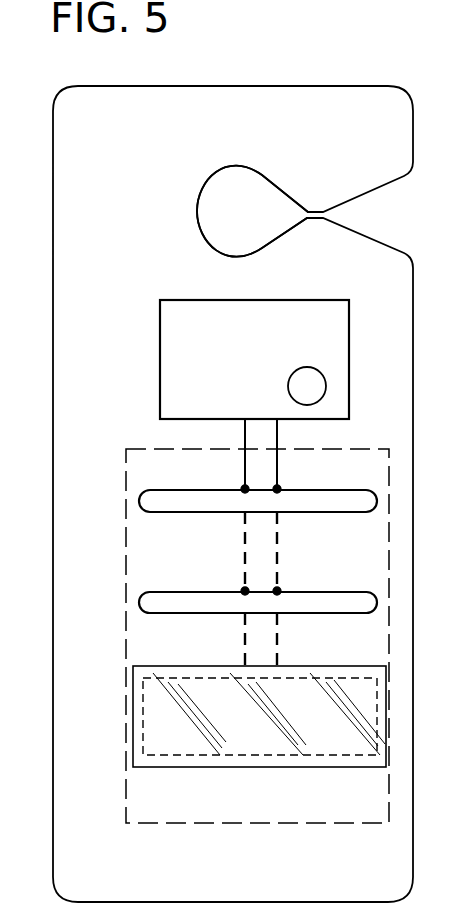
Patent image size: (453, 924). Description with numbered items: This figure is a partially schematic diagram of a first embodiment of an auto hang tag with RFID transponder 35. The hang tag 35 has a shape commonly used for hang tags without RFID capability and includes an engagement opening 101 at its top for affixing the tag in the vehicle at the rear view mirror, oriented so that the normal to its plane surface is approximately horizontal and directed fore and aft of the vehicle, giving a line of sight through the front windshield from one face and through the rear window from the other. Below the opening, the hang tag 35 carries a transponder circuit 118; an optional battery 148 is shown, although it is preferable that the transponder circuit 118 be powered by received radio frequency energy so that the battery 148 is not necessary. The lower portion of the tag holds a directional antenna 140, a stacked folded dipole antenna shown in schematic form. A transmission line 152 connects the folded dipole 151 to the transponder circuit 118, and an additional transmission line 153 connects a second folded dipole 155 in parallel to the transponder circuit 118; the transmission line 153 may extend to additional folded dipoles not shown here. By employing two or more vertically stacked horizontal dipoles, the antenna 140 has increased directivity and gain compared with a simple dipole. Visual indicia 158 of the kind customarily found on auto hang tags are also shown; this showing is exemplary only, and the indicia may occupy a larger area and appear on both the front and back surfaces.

The auto hang tag with RFID transponder 35 is at (38, 134).
The engagement opening 101 is at (277, 182).
The transponder circuit 118 is at (258, 300).
The battery 148 is at (319, 368).
The transmission line 152 is at (245, 472).
The additional transmission line 153 is at (278, 547).
The folded dipole 151 is at (303, 490).
The second folded dipole 155 is at (301, 592).
The visual indicia 158 is at (285, 688).
The directional antenna 140 is at (175, 823).